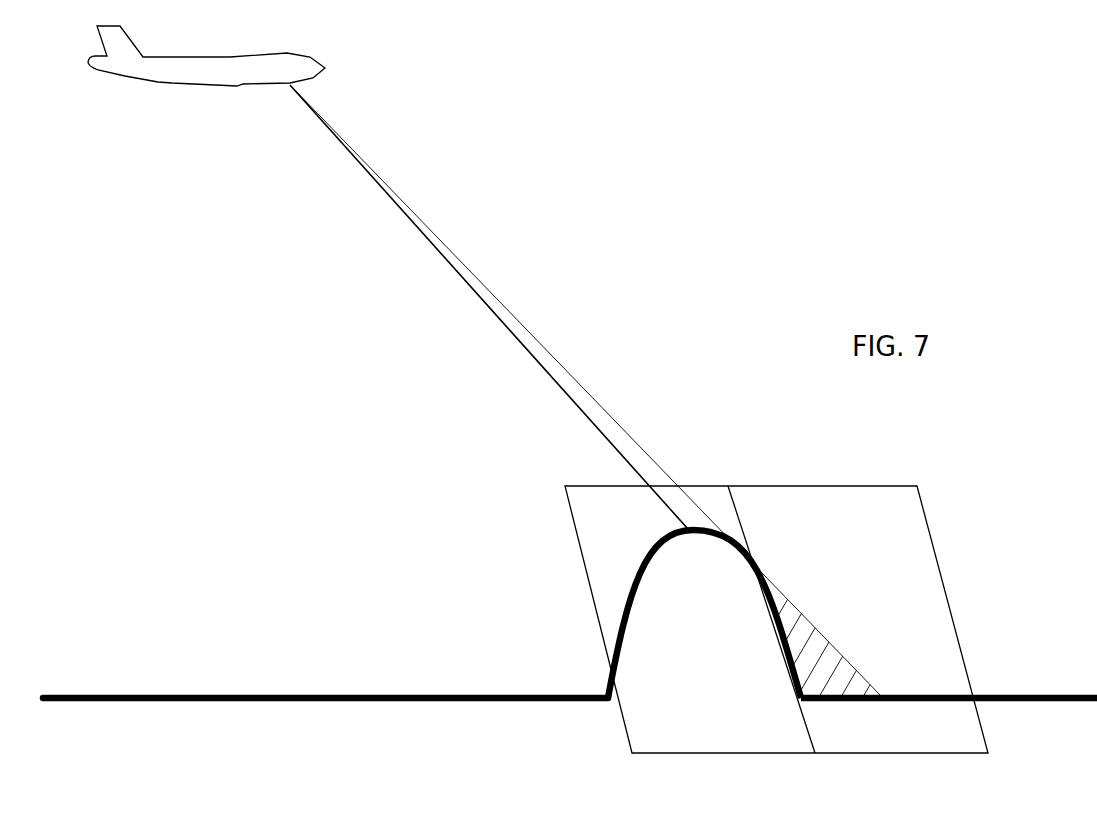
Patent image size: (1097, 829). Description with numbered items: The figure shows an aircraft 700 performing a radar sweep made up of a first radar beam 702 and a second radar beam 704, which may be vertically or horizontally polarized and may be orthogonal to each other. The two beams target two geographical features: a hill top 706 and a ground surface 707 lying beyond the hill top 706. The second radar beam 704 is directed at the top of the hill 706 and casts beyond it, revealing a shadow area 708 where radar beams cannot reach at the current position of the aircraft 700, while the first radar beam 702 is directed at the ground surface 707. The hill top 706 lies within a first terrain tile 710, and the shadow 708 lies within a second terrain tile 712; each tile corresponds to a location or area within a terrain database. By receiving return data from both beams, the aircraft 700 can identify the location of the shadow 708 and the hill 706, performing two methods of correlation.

The aircraft 700 is at (287, 53).
The first radar beam 702 is at (522, 326).
The second radar beam 704 is at (505, 328).
The hill top 706 is at (688, 529).
The ground surface 707 is at (988, 692).
The shadow area 708 is at (797, 625).
The first terrain tile 710 is at (625, 730).
The second terrain tile 712 is at (945, 585).